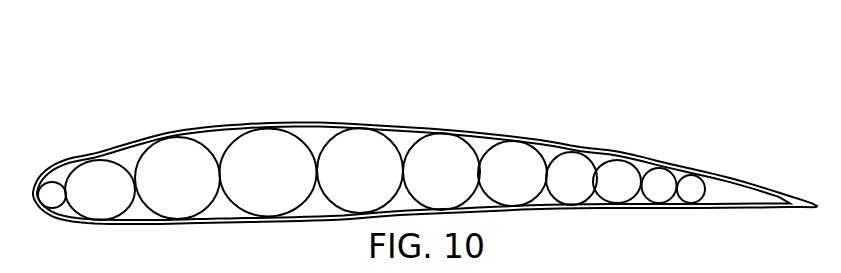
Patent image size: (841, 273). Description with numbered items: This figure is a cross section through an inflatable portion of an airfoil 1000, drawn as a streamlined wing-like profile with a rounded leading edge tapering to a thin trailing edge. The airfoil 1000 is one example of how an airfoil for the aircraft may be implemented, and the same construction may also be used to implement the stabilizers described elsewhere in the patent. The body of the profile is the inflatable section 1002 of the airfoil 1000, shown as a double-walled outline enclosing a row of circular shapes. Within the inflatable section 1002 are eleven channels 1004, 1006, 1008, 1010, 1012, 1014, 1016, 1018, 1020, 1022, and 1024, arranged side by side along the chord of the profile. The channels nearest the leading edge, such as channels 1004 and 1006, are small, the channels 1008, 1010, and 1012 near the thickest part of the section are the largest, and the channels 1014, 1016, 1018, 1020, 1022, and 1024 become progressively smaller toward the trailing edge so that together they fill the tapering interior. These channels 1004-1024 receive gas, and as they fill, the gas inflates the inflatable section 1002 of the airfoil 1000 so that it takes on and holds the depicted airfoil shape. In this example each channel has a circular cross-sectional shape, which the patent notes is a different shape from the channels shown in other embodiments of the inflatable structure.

The airfoil 1000 is at (245, 58).
The inflatable section 1002 is at (752, 178).
The channel 1004 is at (55, 188).
The channel 1006 is at (105, 170).
The channel 1008 is at (172, 148).
The channel 1010 is at (268, 138).
The channel 1012 is at (365, 140).
The channel 1014 is at (443, 142).
The channel 1016 is at (517, 152).
The channel 1018 is at (573, 156).
The channel 1020 is at (617, 193).
The channel 1022 is at (662, 173).
The channel 1024 is at (690, 193).